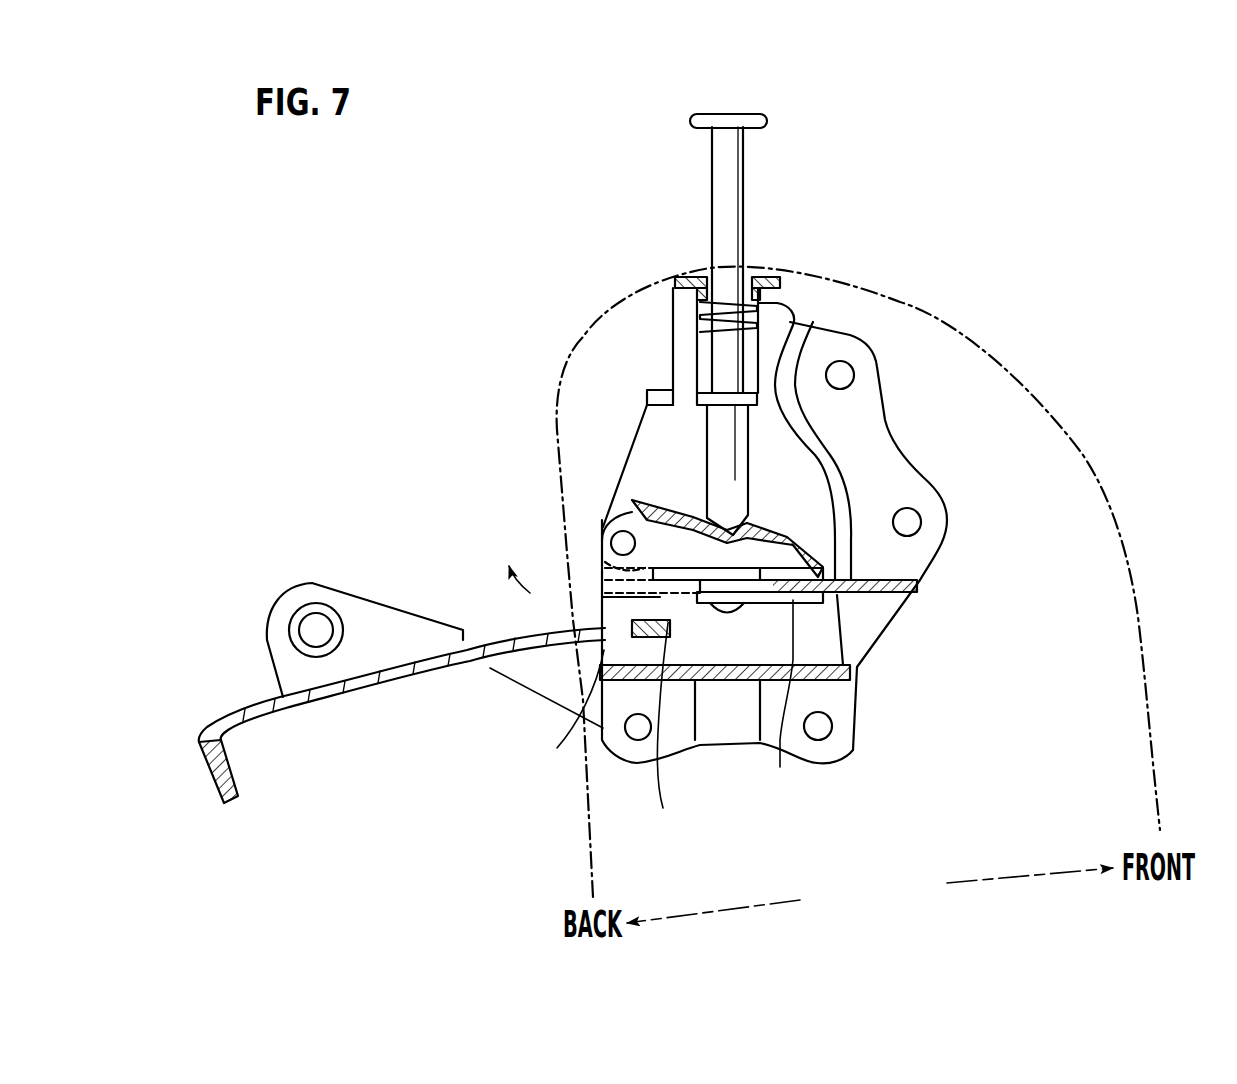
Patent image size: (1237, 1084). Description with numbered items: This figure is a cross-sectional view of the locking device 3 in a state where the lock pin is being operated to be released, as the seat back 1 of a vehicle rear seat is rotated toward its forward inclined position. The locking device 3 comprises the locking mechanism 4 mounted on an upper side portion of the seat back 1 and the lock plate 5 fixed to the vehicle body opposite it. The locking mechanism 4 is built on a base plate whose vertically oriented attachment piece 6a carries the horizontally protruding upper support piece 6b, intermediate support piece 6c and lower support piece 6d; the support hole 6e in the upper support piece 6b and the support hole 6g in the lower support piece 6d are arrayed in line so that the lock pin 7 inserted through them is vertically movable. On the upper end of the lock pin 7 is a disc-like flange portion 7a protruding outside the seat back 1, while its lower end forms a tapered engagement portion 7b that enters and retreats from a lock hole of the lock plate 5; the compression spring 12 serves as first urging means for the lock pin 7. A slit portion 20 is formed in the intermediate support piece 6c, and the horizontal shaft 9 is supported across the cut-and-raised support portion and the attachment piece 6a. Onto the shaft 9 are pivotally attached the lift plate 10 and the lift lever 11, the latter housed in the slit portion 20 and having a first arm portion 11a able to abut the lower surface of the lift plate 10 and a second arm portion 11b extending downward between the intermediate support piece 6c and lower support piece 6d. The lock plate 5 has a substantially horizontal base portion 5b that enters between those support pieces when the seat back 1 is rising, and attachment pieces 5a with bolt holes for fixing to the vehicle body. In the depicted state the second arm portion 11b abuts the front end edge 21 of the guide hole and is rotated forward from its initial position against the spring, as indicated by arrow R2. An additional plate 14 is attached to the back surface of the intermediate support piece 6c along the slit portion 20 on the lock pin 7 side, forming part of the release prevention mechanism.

The seat back 1 is at (567, 363).
The locking device 3 is at (428, 527).
The locking mechanism 4 is at (709, 355).
The lock plate 5 is at (248, 685).
The attachment piece 5a is at (292, 600).
The base portion 5b is at (283, 700).
The attachment piece 6a is at (873, 420).
The upper support piece 6b is at (693, 275).
The intermediate support piece 6c is at (918, 586).
The lower support piece 6d is at (853, 673).
The support hole 6e is at (753, 275).
The support hole 6g is at (742, 680).
The lock pin 7 is at (733, 180).
The flange portion 7a is at (693, 120).
The engagement portion 7b is at (707, 510).
The shaft 9 is at (620, 543).
The lift plate 10 is at (853, 530).
The lift lever 11 is at (605, 573).
The first arm portion 11a is at (760, 512).
The second arm portion 11b is at (600, 660).
The compression spring 12 is at (787, 307).
The additional plate 14 is at (786, 703).
The slit portion 20 is at (823, 570).
The front end edge 21 is at (665, 734).
The arrow R2 is at (577, 610).